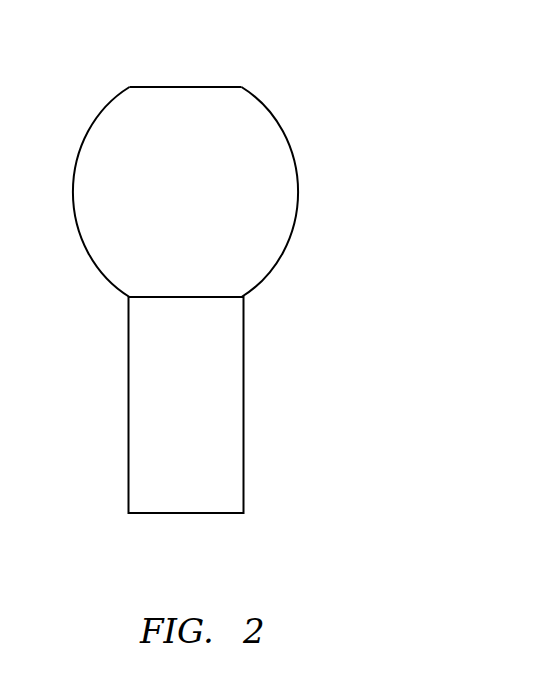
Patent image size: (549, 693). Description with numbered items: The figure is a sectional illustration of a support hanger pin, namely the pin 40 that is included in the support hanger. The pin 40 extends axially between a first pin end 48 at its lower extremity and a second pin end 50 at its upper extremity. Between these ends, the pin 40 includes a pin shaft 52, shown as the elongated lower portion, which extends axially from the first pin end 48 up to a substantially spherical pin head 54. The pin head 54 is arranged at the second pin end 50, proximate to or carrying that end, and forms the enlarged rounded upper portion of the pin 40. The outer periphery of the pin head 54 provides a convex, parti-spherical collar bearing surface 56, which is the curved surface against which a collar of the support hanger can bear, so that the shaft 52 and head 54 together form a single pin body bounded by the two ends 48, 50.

The pin 40 is at (254, 308).
The first pin end 48 is at (198, 513).
The second pin end 50 is at (213, 87).
The pin shaft 52 is at (244, 393).
The pin head 54 is at (231, 157).
The parti-spherical collar bearing surface 56 is at (231, 167).